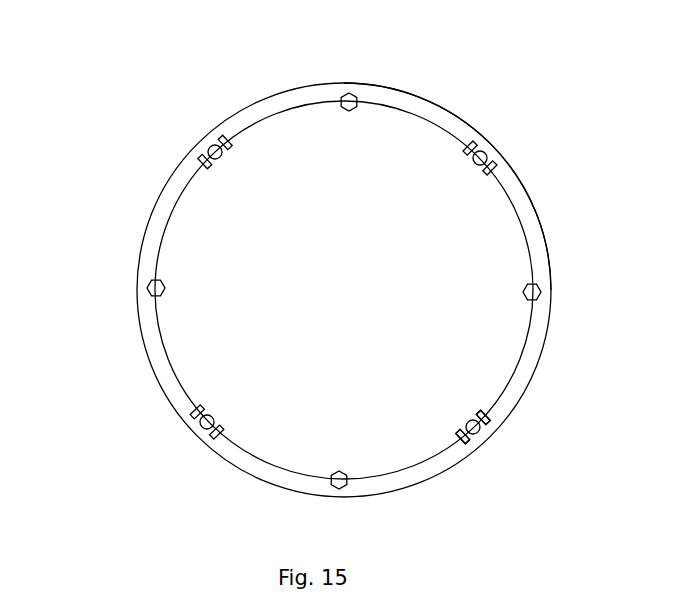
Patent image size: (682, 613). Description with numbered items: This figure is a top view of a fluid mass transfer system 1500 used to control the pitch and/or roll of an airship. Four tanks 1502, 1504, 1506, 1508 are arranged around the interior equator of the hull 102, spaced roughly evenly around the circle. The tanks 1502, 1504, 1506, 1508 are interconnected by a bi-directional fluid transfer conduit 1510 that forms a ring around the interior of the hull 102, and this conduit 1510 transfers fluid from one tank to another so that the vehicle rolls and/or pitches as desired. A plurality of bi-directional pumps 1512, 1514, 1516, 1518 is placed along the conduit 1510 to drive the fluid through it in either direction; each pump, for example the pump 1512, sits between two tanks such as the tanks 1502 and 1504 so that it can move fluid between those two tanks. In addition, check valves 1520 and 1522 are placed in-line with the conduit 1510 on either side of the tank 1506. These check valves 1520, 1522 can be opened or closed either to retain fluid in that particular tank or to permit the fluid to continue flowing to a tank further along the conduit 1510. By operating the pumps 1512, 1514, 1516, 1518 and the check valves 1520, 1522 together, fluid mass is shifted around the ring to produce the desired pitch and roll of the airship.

The hull 102 is at (141, 367).
The fluid mass transfer system 1500 is at (475, 75).
The bi-directional fluid transfer conduit 1510 is at (518, 207).
The bi-directional pump 1512 is at (365, 91).
The bi-directional pump 1514 is at (541, 291).
The bi-directional pump 1516 is at (341, 489).
The bi-directional pump 1518 is at (148, 289).
The tank 1502 is at (209, 143).
The tank 1504 is at (489, 152).
The tank 1506 is at (481, 431).
The tank 1508 is at (195, 430).
The check valve 1520 is at (490, 415).
The check valve 1522 is at (465, 440).